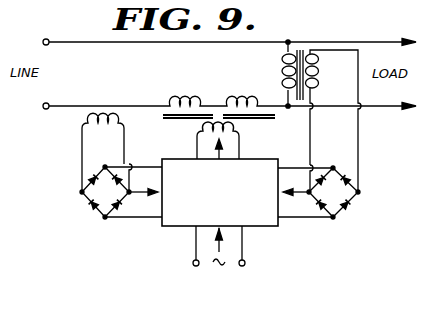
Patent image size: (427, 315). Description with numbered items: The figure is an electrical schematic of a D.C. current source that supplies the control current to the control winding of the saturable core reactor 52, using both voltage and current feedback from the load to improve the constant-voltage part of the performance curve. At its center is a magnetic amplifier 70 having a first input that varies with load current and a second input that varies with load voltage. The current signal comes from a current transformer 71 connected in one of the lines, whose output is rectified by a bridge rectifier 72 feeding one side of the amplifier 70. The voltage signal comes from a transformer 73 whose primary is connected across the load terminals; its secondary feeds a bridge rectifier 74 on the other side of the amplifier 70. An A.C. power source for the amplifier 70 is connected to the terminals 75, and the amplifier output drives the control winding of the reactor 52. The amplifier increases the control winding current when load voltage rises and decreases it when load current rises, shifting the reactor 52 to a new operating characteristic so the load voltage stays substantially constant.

The saturable core reactor 52 is at (220, 105).
The amplifier 70 is at (182, 217).
The current transformer 71 is at (90, 118).
The bridge rectifier 72 is at (93, 189).
The transformer 73 is at (283, 63).
The bridge rectifier 74 is at (342, 197).
The terminals 75 is at (193, 265).